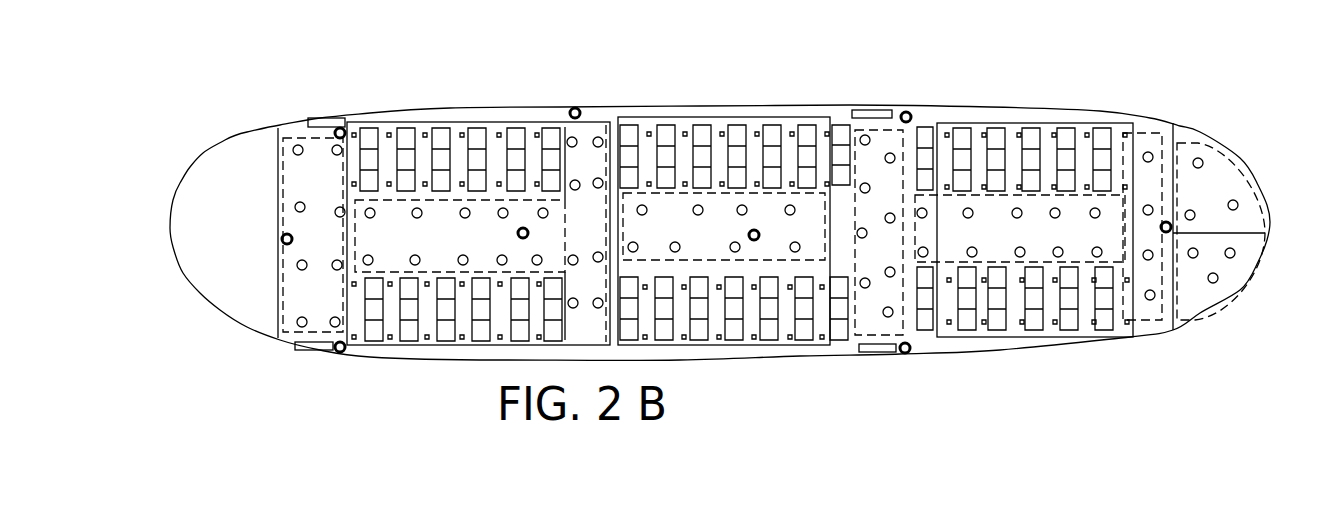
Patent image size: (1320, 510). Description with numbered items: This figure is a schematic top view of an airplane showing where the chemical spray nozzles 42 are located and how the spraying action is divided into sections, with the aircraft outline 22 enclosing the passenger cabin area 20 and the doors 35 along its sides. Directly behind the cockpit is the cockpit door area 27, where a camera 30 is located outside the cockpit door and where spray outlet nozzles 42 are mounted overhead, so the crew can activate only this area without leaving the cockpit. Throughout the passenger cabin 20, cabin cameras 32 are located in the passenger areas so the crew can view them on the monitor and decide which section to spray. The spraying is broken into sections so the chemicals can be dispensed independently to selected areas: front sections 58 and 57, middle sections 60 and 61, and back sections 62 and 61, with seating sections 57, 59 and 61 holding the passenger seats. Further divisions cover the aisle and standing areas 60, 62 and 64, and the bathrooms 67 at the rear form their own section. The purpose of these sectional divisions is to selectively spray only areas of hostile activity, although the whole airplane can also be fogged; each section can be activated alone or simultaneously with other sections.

The passenger cabin area 20 is at (720, 230).
The fuselage 22 is at (232, 128).
The cockpit door area 27 is at (292, 138).
The camera 30 is at (282, 240).
The cabin camera 32 is at (337, 129).
The doors 35 is at (302, 352).
The spray nozzle 42 is at (295, 206).
The front section 57 is at (478, 207).
The front section 58 is at (505, 200).
The second seating section 59 is at (734, 204).
The middle section 60 is at (747, 190).
The middle and back section 61 is at (1024, 198).
The back section 62 is at (1065, 195).
The aisle and standing area section 64 is at (670, 133).
The bathrooms 67 is at (1207, 150).